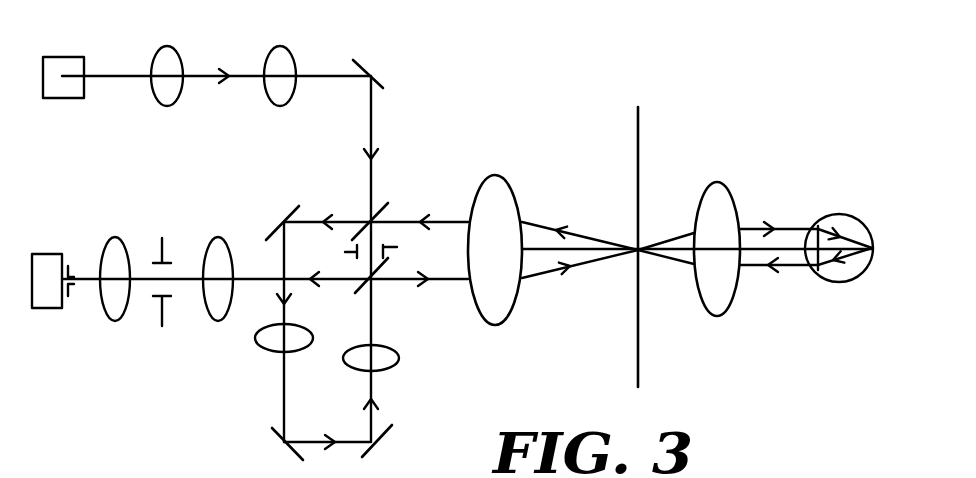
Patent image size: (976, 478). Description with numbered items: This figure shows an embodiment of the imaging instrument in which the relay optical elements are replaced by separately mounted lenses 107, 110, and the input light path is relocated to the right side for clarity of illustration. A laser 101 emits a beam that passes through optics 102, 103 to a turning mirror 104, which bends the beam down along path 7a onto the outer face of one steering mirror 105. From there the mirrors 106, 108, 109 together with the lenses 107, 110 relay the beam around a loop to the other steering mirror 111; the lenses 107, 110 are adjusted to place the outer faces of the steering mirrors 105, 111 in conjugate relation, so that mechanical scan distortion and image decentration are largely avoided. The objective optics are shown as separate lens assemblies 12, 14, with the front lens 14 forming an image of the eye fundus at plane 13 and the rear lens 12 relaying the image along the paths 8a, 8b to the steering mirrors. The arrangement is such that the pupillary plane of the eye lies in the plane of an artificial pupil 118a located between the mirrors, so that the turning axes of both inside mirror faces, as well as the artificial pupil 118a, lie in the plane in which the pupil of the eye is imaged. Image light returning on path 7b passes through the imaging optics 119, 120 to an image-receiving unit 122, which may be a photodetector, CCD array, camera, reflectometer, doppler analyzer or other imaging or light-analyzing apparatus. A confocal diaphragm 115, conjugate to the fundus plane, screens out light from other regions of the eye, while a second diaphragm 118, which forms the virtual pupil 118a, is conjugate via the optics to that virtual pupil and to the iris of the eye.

The laser 101 is at (65, 57).
The optics 102 is at (169, 47).
The optics 103 is at (283, 47).
The turning mirror 104 is at (364, 62).
The steering mirror 105 is at (383, 205).
The mirror 106 is at (296, 208).
The lens 107 is at (262, 348).
The mirror 108 is at (272, 436).
The mirror 109 is at (371, 452).
The lens 110 is at (399, 360).
The steering mirror 111 is at (365, 286).
The rear lens 12 is at (506, 182).
The plane 13 is at (639, 193).
The front lens 14 is at (720, 184).
The light beam 7a is at (371, 123).
The path 7b is at (256, 281).
The light beam 8a is at (450, 281).
The light beam 8b is at (448, 220).
The confocal diaphragm 115 is at (162, 238).
The second diaphragm 118 is at (69, 296).
The artificial pupil 118a is at (397, 247).
The imaging optics 119 is at (218, 237).
The imaging optics 120 is at (116, 237).
The image-receiving unit 122 is at (48, 254).